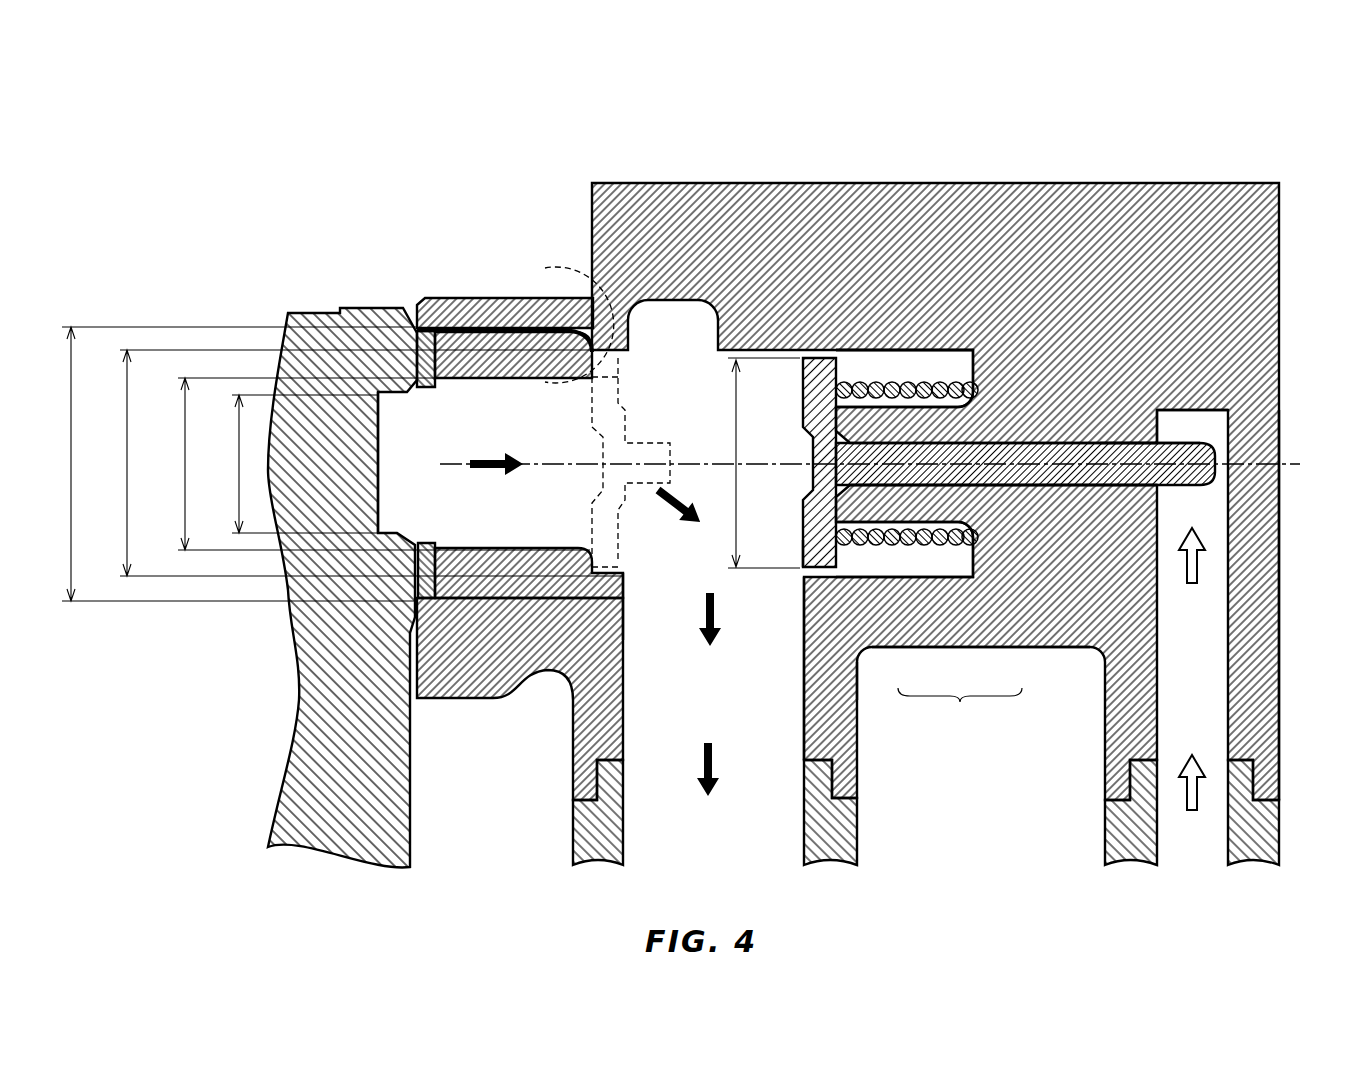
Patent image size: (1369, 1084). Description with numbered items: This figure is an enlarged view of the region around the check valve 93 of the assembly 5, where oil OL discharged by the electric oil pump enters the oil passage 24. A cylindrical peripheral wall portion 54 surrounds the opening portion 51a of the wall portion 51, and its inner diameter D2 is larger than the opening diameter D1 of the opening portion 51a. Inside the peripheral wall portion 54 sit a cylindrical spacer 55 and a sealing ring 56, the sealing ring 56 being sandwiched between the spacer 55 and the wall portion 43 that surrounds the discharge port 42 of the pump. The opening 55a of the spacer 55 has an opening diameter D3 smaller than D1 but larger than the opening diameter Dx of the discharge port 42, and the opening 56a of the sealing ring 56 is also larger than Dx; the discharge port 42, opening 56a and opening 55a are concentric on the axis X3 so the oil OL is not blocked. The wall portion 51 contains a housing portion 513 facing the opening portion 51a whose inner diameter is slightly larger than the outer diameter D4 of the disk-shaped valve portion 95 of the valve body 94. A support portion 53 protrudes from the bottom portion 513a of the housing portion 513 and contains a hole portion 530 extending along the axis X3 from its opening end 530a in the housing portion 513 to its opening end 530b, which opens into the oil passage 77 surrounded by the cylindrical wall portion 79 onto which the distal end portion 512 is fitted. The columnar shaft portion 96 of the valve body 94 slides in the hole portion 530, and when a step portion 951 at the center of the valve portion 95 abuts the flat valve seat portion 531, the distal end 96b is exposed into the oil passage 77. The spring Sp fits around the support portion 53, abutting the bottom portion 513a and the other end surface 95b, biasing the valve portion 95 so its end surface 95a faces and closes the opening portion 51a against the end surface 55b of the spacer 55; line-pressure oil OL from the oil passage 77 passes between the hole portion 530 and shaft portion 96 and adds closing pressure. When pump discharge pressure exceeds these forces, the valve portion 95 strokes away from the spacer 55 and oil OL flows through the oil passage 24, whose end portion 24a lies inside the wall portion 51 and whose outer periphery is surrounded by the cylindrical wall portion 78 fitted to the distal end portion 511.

The drive unit 5 is at (1181, 128).
The oil passage 24 is at (693, 860).
The end portion 24a is at (725, 720).
The discharge port 42 is at (375, 500).
The wall portion 43 is at (418, 395).
The wall portion 51 is at (857, 712).
The opening portion 51a is at (620, 578).
The distal end portion 511 is at (848, 779).
The distal end portion 512 is at (1283, 677).
The housing portion 513 is at (975, 372).
The bottom portion 513a is at (972, 560).
The support portion 53 is at (912, 392).
The hole portion 530 is at (1098, 442).
The opening end 530a is at (852, 490).
The opening end 530b is at (1152, 442).
The valve seat portion 531 is at (803, 515).
The peripheral wall portion 54 is at (452, 300).
The spacer 55 is at (487, 560).
The opening 55a is at (573, 598).
The end surface 55b is at (585, 328).
The sealing ring 56 is at (455, 598).
The opening 56a is at (436, 388).
The oil passage 77 is at (1176, 718).
The cylindrical wall portion 78 is at (835, 832).
The cylindrical wall portion 79 is at (1283, 831).
The check valve 93 is at (960, 712).
The valve body 94 is at (845, 566).
The valve portion 95 is at (815, 350).
The end surface 95a is at (803, 552).
The end surface 95b is at (842, 550).
The step portion 951 is at (840, 382).
The shaft portion 96 is at (1048, 432).
The distal end 96b is at (1207, 443).
The oil OL is at (698, 752).
The spring Sp is at (935, 552).
The axis X3 is at (888, 464).
The opening diameter D1 is at (357, 463).
The inner diameter D2 is at (226, 464).
The opening diameter D3 is at (369, 464).
The outer diameter D4 is at (750, 463).
The opening diameter Dx is at (290, 464).